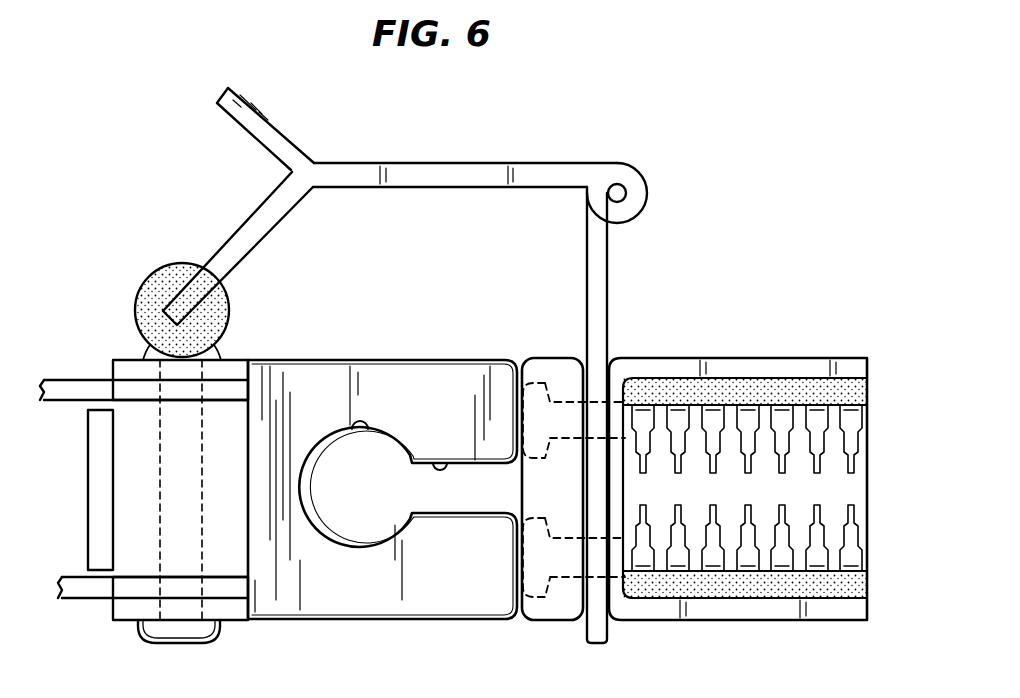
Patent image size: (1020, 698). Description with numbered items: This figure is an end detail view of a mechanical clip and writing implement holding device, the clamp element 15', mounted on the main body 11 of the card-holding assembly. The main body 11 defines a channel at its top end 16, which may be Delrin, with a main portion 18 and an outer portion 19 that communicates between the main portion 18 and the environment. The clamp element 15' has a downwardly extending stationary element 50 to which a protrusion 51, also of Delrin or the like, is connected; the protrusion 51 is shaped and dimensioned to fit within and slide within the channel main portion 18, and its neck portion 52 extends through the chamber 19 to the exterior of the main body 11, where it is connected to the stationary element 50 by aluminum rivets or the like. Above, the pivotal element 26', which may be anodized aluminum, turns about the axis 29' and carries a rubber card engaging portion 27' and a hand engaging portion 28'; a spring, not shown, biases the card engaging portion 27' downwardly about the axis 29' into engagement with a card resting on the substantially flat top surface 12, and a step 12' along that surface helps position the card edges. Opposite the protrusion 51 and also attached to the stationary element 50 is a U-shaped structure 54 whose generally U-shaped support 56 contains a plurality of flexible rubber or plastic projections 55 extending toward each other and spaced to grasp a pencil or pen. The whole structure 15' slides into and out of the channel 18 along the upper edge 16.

The main body 11 is at (382, 469).
The substantially flat top surface 12 is at (142, 467).
The step 12' is at (162, 477).
The clamp element 15' is at (434, 361).
The top end 16 is at (509, 349).
The main portion of channel 18 is at (367, 428).
The outer portion of channel 19 is at (440, 462).
The pivotal element 26' is at (465, 153).
The card engaging portion 27' is at (163, 298).
The hand engaging portion 28' is at (265, 128).
The axis 29' is at (646, 193).
The stationary element 50 is at (600, 293).
The protrusion 51 is at (351, 528).
The neck portion 52 is at (470, 500).
The U-shaped structure 54 is at (762, 461).
The flexible projections 55 is at (866, 445).
The U-shaped support 56 is at (665, 362).